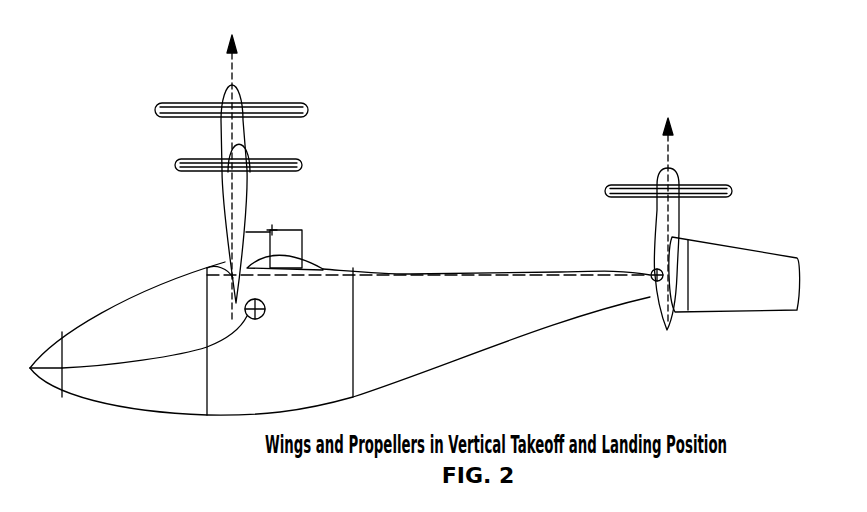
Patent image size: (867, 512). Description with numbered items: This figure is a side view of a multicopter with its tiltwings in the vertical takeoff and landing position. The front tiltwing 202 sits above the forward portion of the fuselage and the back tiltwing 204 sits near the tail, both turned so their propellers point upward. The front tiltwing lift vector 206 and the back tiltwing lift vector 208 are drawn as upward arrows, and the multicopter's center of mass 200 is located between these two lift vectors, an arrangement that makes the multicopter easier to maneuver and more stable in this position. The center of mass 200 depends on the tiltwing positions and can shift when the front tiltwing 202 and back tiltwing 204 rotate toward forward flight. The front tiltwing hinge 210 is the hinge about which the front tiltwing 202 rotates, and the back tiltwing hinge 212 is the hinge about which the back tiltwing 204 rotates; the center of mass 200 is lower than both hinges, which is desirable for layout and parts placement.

The center of mass 200 is at (262, 319).
The front tiltwing 202 is at (223, 220).
The back tiltwing 204 is at (732, 312).
The front tiltwing lift vector 206 is at (233, 62).
The back tiltwing lift vector 208 is at (666, 150).
The front tiltwing hinge 210 is at (276, 224).
The back tiltwing hinge 212 is at (652, 290).